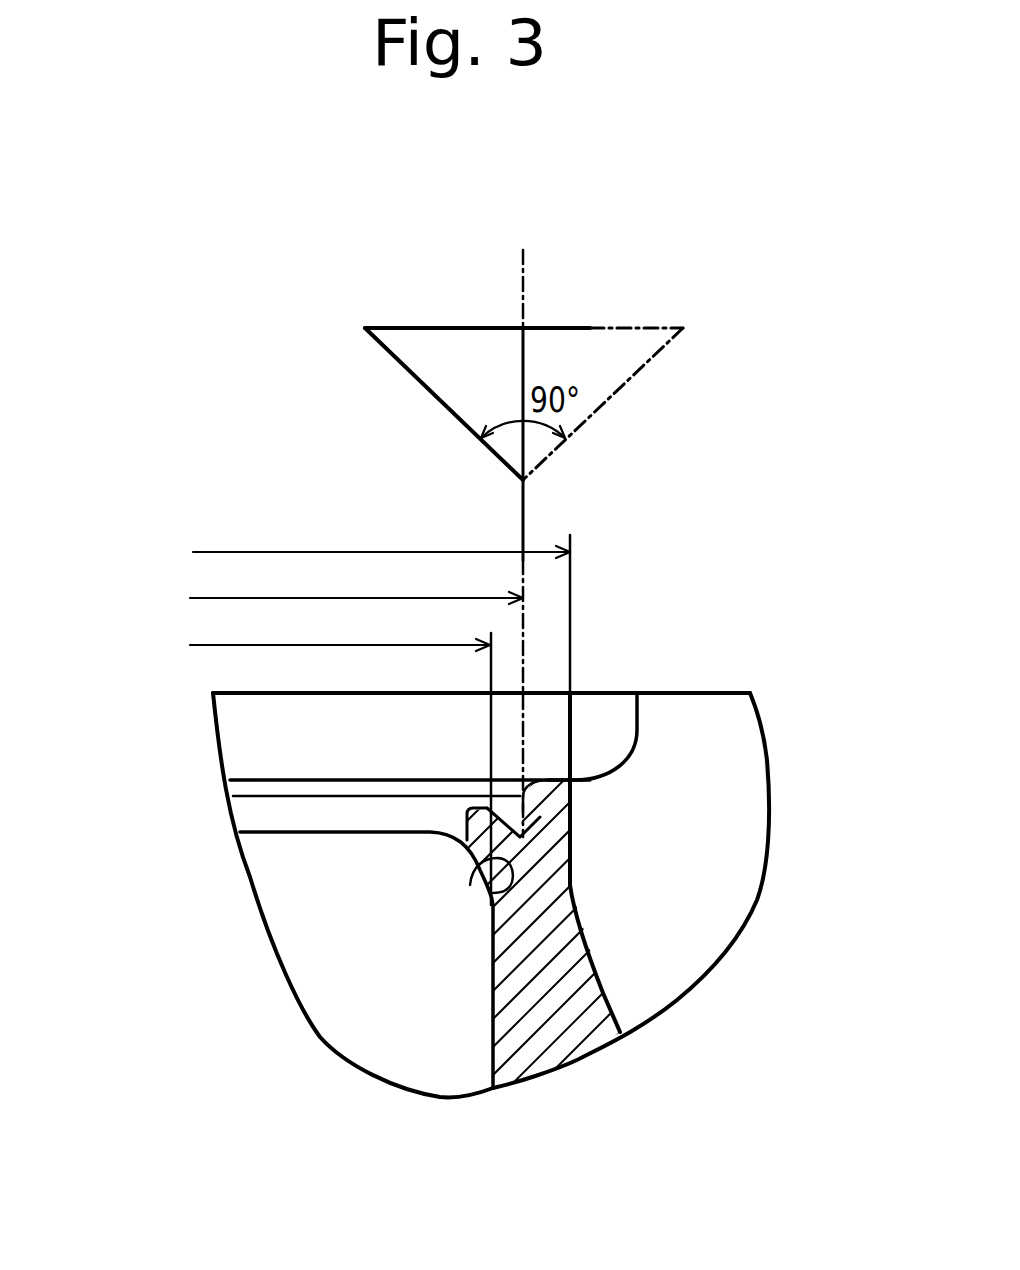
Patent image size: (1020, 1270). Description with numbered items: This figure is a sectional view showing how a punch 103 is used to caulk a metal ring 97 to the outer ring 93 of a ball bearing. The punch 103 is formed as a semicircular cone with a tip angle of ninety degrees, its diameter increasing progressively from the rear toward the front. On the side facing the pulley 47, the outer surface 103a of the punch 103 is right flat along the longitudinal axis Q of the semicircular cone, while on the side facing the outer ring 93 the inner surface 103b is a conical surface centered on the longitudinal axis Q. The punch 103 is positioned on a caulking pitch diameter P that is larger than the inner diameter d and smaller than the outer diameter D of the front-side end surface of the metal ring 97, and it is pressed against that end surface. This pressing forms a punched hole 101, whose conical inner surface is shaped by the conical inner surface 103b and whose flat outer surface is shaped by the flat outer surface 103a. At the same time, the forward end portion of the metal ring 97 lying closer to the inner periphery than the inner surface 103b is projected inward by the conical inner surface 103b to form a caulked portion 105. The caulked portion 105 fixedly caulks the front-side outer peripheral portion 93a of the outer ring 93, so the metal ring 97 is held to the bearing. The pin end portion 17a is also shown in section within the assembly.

The punch 103 is at (450, 328).
The outer surface of punch 103a is at (526, 365).
The inner surface of punch 103b is at (420, 388).
The longitudinal axis Q is at (527, 268).
The outer diameter D is at (381, 531).
The caulking pitch diameter P is at (356, 579).
The inner diameter d is at (340, 627).
The pin end portion 17a is at (560, 780).
The pulley 47 is at (717, 693).
The punched hole 101 is at (500, 818).
The caulked portion 105 is at (467, 822).
The outer ring 93 is at (373, 1005).
The front-side outer peripheral portion of outer ring 93a is at (490, 892).
The metal ring 97 is at (590, 955).